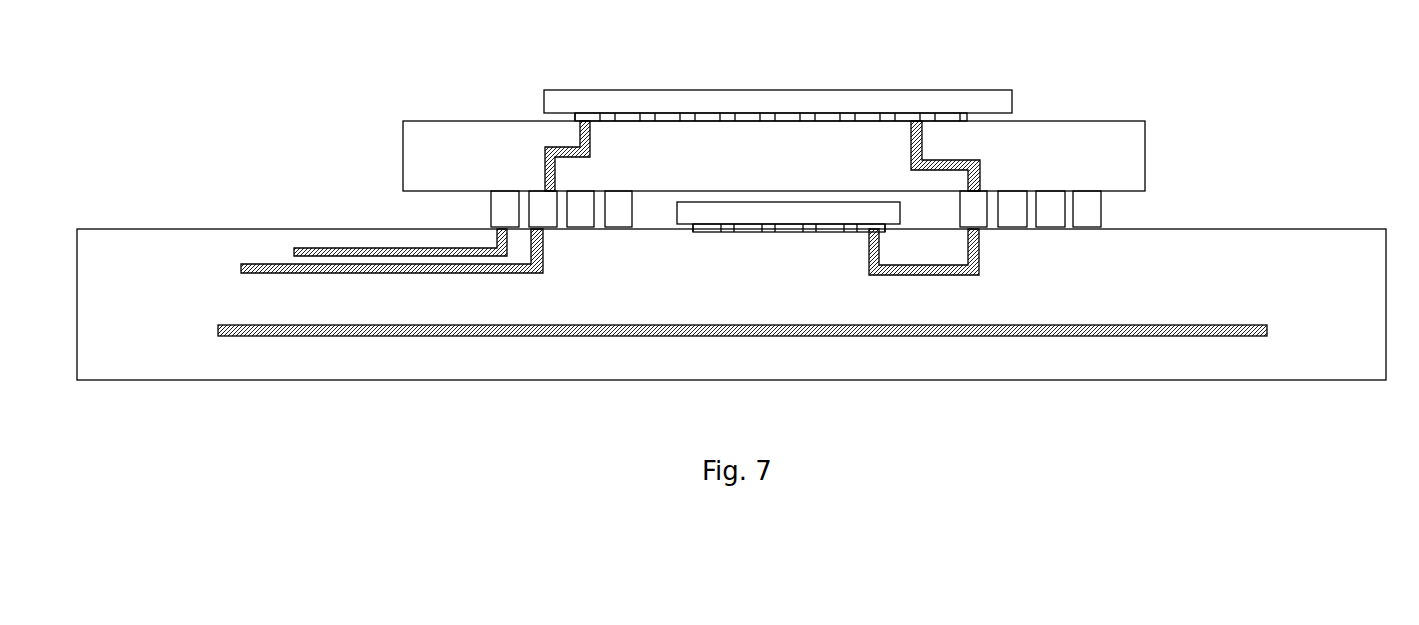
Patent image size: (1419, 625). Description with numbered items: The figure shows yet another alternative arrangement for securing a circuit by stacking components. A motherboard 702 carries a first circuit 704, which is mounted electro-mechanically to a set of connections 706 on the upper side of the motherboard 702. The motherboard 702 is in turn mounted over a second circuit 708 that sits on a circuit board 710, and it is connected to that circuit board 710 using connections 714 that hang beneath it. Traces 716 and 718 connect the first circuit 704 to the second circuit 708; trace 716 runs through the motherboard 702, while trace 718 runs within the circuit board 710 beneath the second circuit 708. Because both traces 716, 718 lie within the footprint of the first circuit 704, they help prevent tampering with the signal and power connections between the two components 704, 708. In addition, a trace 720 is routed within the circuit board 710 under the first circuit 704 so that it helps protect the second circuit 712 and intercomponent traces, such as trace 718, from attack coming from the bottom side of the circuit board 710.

The motherboard 702 is at (1148, 157).
The first circuit 704 is at (890, 90).
The set of connections 706 is at (970, 117).
The second circuit 708 is at (797, 204).
The circuit board 710 is at (562, 382).
The second circuit 712 is at (750, 234).
The connections 714 is at (1101, 215).
The trace 716 is at (980, 163).
The trace 718 is at (979, 265).
The trace 720 is at (848, 338).